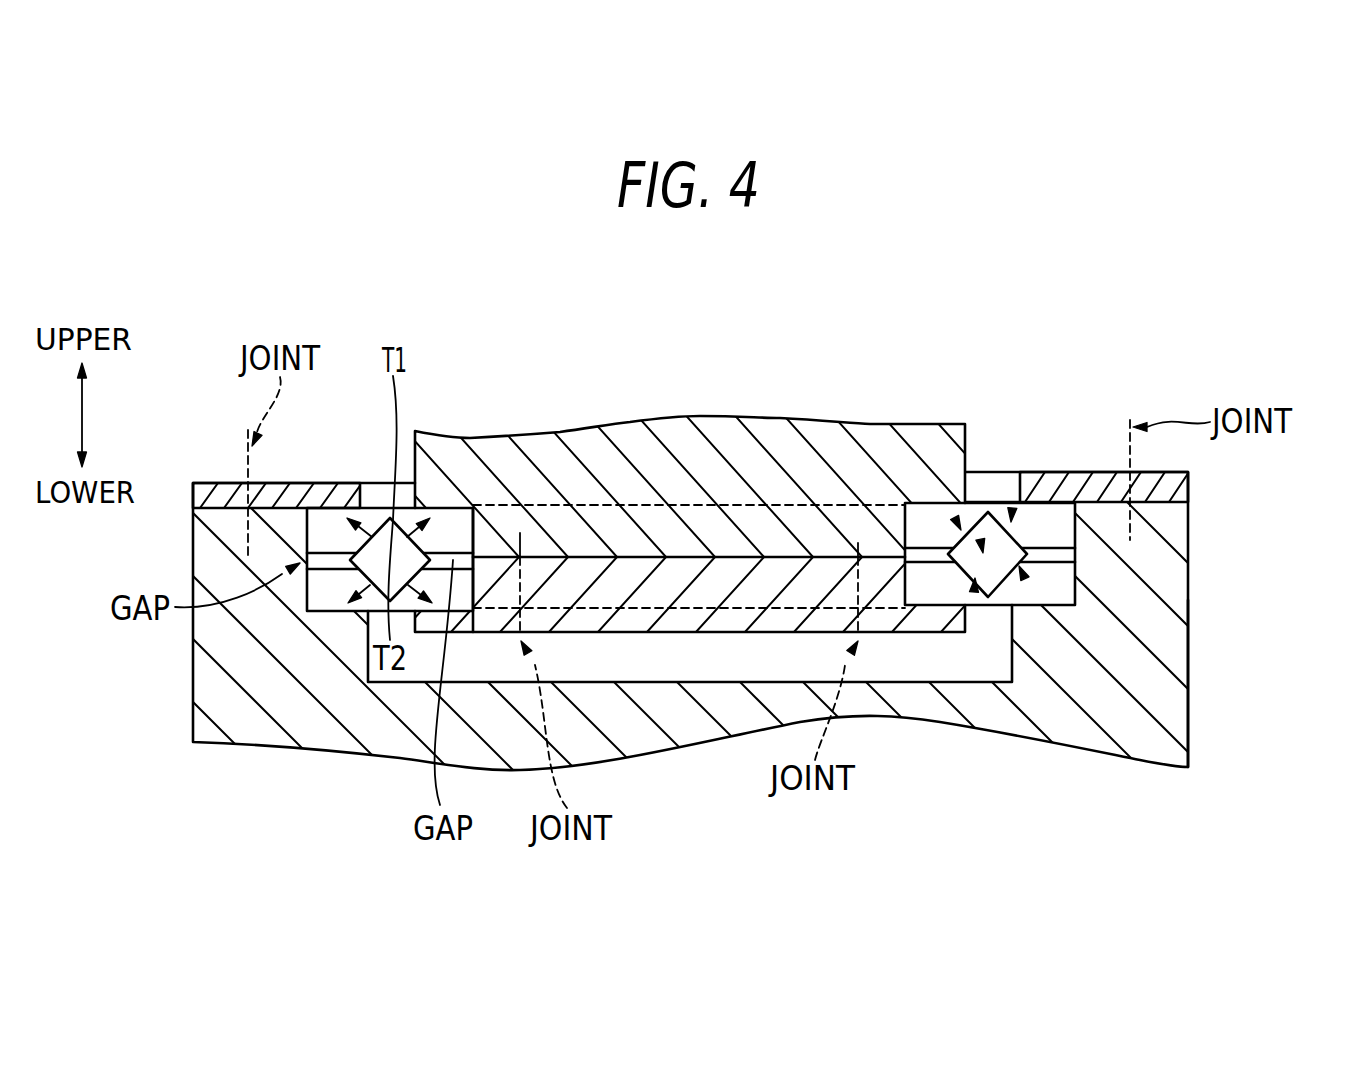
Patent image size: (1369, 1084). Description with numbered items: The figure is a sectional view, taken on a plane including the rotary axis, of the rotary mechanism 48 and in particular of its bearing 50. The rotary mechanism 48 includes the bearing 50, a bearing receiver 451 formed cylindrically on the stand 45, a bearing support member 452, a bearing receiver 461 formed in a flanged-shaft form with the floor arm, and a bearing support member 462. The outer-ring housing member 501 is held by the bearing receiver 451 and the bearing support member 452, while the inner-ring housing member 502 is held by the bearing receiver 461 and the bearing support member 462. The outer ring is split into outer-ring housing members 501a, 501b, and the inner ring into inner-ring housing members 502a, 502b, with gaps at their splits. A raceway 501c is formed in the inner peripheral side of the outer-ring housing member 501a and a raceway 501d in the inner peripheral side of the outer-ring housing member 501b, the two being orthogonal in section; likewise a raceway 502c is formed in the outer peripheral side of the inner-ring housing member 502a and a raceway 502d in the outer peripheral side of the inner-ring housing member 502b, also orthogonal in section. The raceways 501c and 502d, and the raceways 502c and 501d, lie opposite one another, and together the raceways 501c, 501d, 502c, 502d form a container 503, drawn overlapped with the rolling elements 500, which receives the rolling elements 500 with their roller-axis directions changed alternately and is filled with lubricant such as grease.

The stand 45 is at (1209, 759).
The bearing receiver 451 is at (1157, 706).
The bearing support member 452 is at (1188, 486).
The rotary mechanism 48 is at (500, 426).
The bearing receiver 461 is at (686, 428).
The bearing support member 462 is at (688, 620).
The bearing 50 is at (283, 612).
The rolling elements 500 is at (1012, 540).
The outer-ring housing member 501 is at (1300, 557).
The outer-ring housing member 501a is at (1058, 527).
The outer-ring housing member 501b is at (1060, 583).
The raceway 501c is at (1012, 508).
The raceway 501d is at (1030, 590).
The inner-ring housing member 502 is at (860, 523).
The inner-ring housing member 502a is at (928, 518).
The inner-ring housing member 502b is at (850, 519).
The raceway 502c is at (955, 518).
The raceway 502d is at (975, 590).
The container 503 is at (980, 538).